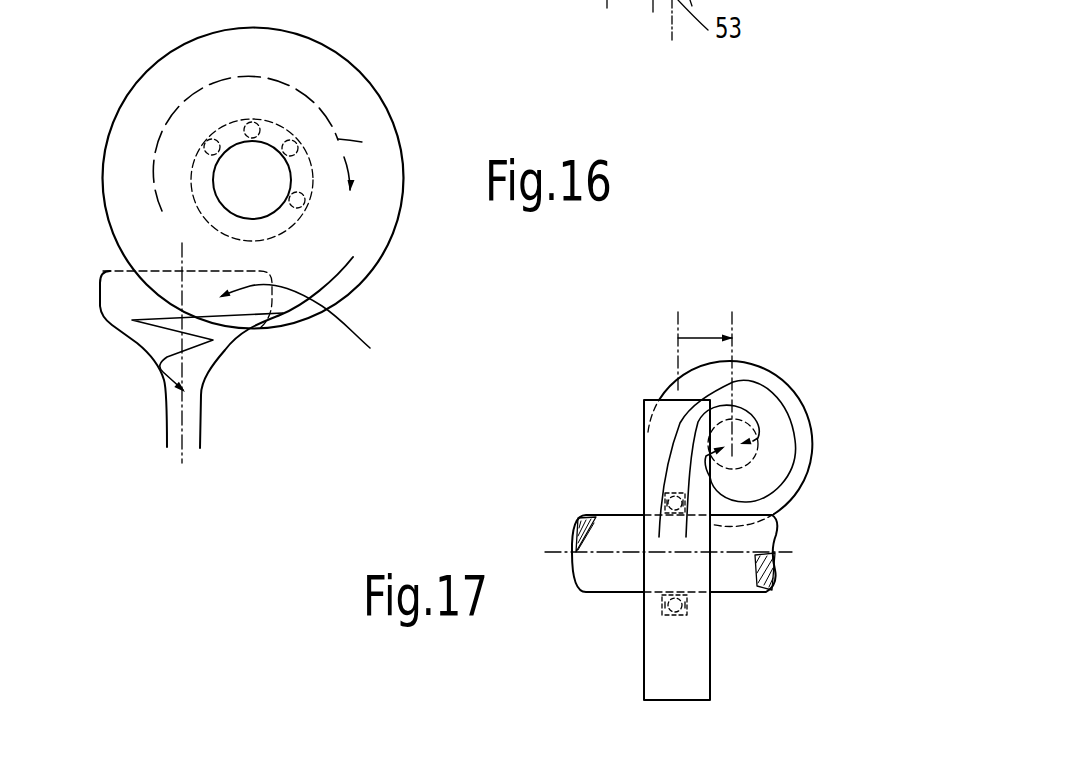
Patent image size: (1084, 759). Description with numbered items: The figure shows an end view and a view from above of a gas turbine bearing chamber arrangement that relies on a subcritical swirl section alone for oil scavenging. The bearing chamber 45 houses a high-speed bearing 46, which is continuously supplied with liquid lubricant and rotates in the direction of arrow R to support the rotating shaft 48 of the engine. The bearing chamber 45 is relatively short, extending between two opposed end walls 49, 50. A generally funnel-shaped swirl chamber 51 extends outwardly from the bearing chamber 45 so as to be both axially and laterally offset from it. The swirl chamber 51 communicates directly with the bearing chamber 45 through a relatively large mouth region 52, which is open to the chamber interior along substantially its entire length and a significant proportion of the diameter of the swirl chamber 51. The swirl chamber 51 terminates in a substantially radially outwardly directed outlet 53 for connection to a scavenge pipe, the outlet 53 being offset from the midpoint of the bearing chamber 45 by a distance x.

In FIG. 17, the bearing chamber 45 is at (637, 672).
In FIG. 16, the high-speed bearing 46 is at (282, 132).
In FIG. 17, the rotating shaft 48 is at (732, 582).
In FIG. 17, the end wall 49 is at (643, 625).
In FIG. 17, the end wall 50 is at (712, 662).
In FIG. 16, the swirl chamber 51 is at (108, 318).
In FIG. 17, the swirl chamber 51 is at (817, 423).
In FIG. 16, the mouth region 52 is at (267, 338).
In FIG. 17, the mouth region 52 is at (657, 507).
In FIG. 16, the outlet 53 is at (175, 437).
In FIG. 17, the outlet 53 is at (743, 417).